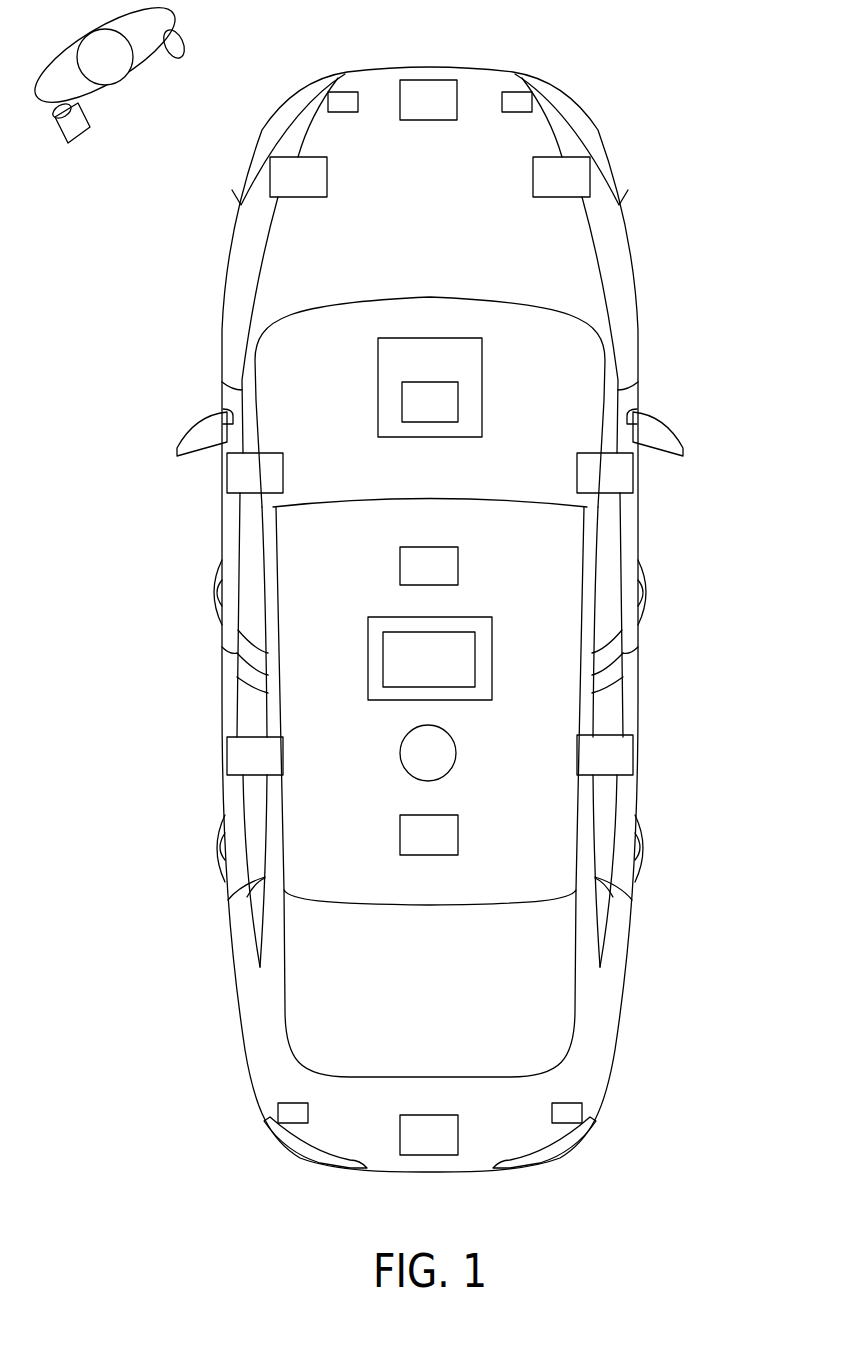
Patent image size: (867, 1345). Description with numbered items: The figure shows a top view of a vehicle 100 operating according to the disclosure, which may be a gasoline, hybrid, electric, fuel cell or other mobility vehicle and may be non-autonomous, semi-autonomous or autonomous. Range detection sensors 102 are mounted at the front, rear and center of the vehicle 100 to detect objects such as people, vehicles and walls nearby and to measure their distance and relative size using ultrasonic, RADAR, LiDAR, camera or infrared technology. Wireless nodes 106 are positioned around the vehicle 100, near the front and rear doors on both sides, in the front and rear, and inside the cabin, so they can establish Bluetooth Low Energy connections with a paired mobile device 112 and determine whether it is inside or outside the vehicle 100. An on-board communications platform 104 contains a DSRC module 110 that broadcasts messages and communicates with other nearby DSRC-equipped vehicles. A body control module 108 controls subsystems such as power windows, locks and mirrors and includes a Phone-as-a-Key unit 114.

The vehicle 100 is at (640, 252).
The range detection sensors 102 is at (343, 92).
The on-board communications platform 104 is at (492, 634).
The wireless nodes 106 is at (428, 120).
The body control module 108 is at (482, 370).
The DSRC module 110 is at (475, 660).
The mobile device 112 is at (92, 128).
The Phone-as-a-Key (PaaK) unit 114 is at (447, 412).